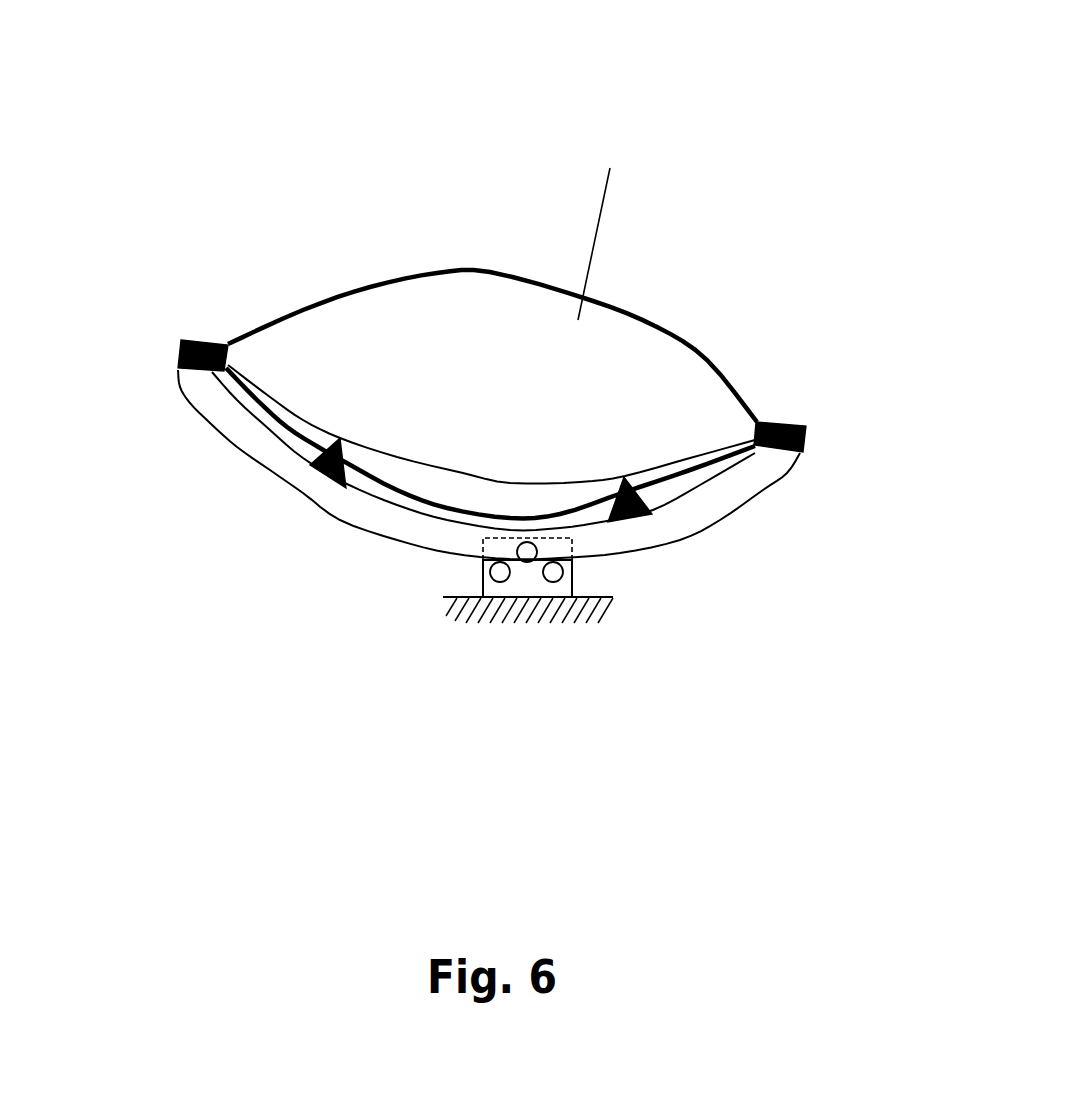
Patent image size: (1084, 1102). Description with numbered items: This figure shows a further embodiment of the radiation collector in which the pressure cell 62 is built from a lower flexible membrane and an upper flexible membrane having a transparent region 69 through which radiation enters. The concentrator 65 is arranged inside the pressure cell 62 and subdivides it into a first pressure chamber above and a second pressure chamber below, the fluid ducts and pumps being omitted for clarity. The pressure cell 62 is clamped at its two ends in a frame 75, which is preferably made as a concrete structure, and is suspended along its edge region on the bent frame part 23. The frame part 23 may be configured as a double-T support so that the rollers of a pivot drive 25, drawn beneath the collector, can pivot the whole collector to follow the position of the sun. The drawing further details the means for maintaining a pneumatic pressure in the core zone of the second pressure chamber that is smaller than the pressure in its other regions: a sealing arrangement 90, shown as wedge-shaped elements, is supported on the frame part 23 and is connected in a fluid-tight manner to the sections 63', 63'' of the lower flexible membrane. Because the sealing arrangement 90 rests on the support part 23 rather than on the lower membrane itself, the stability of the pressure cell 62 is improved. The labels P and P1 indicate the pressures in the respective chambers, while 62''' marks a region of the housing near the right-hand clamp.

The pressure cell 62 is at (503, 340).
The transparent region 69 is at (705, 357).
The concentrator 65 is at (590, 478).
The section of the lower flexible membrane 63' is at (422, 451).
The section of the lower flexible membrane 63'' is at (490, 502).
The housing region 62''' is at (750, 545).
The frame part 23 is at (250, 443).
The frame 75 is at (192, 342).
The sealing arrangement 90 is at (320, 475).
The pivot drive 25 is at (525, 577).
The pressure P is at (281, 413).
The pressure P1 is at (467, 488).